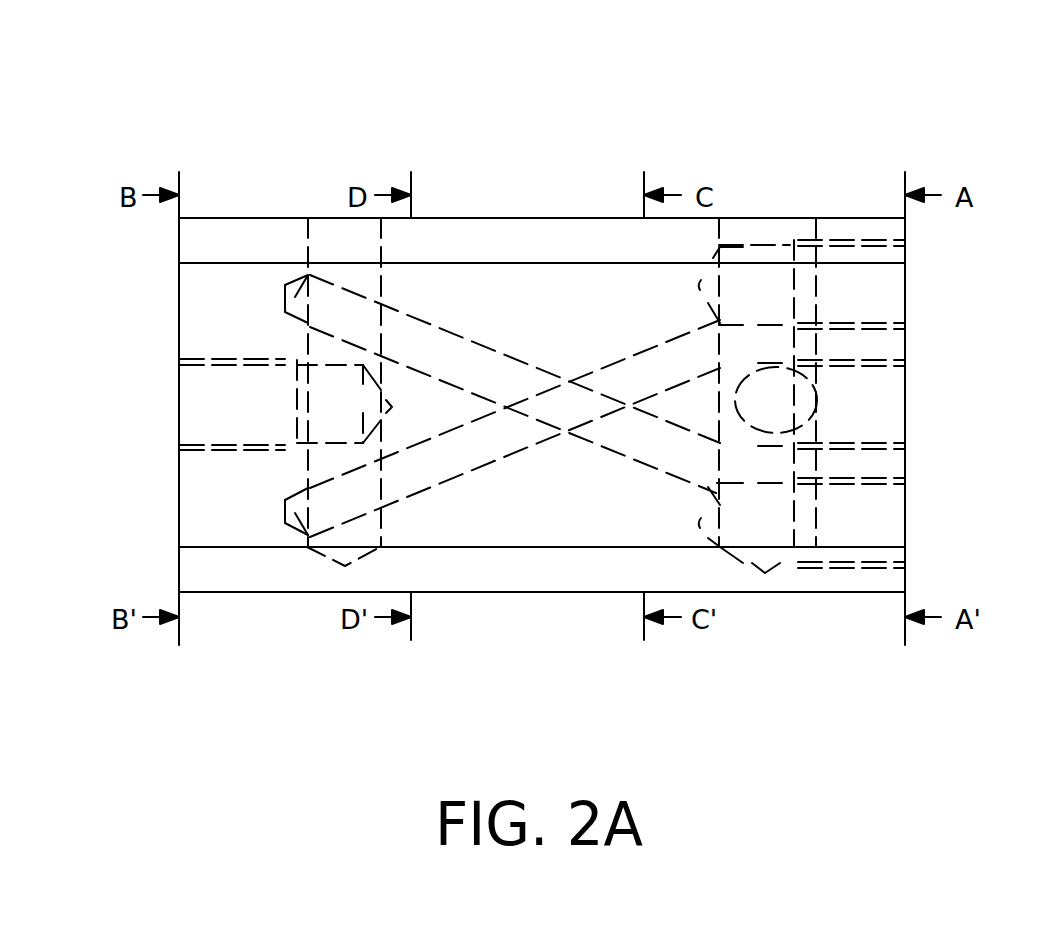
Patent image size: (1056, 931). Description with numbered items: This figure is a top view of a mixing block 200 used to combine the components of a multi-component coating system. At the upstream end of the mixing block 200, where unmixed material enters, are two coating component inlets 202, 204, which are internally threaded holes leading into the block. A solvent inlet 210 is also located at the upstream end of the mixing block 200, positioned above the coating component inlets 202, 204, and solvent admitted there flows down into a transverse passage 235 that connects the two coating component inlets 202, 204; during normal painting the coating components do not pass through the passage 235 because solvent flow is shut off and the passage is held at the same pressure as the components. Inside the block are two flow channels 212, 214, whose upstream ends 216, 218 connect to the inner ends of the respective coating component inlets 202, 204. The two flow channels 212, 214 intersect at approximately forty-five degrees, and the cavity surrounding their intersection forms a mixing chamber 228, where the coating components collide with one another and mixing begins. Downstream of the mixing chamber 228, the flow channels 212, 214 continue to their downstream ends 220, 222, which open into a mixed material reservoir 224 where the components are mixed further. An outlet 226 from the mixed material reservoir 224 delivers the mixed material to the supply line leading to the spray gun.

The mixing block 200 is at (291, 62).
The coating component inlet 202 is at (853, 275).
The coating component inlet 204 is at (851, 518).
The solvent inlet 210 is at (865, 392).
The flow channel 212 is at (457, 457).
The flow channel 214 is at (457, 357).
The upstream end of flow channel 216 is at (742, 333).
The upstream end of flow channel 218 is at (750, 477).
The downstream end of flow channel 220 is at (392, 330).
The downstream end of flow channel 222 is at (388, 478).
The mixed material reservoir 224 is at (317, 346).
The outlet 226 is at (225, 427).
The mixing chamber 228 is at (562, 400).
The transverse passage 235 is at (795, 462).